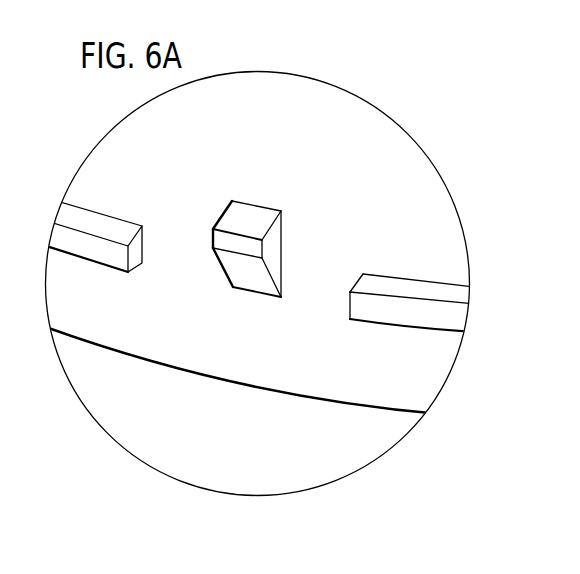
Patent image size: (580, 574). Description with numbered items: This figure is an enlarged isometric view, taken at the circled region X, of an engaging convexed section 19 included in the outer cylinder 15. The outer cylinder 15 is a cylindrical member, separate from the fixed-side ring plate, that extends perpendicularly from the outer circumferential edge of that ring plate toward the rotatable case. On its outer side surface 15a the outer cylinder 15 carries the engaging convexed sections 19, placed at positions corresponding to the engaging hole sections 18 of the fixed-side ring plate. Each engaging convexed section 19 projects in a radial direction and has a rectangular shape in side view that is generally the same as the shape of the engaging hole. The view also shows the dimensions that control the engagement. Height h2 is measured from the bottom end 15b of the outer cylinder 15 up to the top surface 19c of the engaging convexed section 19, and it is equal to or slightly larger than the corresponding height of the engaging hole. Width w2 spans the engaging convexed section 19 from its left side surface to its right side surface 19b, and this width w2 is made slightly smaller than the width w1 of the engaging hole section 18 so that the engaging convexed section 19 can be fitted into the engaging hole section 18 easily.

The outer cylinder 15 is at (108, 302).
The outer side surface 15a is at (133, 187).
The bottom end 15b is at (153, 364).
The engaging hole section 18 is at (212, 233).
The engaging convexed section 19 is at (321, 320).
The right side surface 19b is at (270, 248).
The top surface 19c is at (243, 215).
The enlarged region X is at (431, 160).
The width w1 is at (563, 573).
The width w2 is at (281, 211).
The height h2 is at (288, 210).